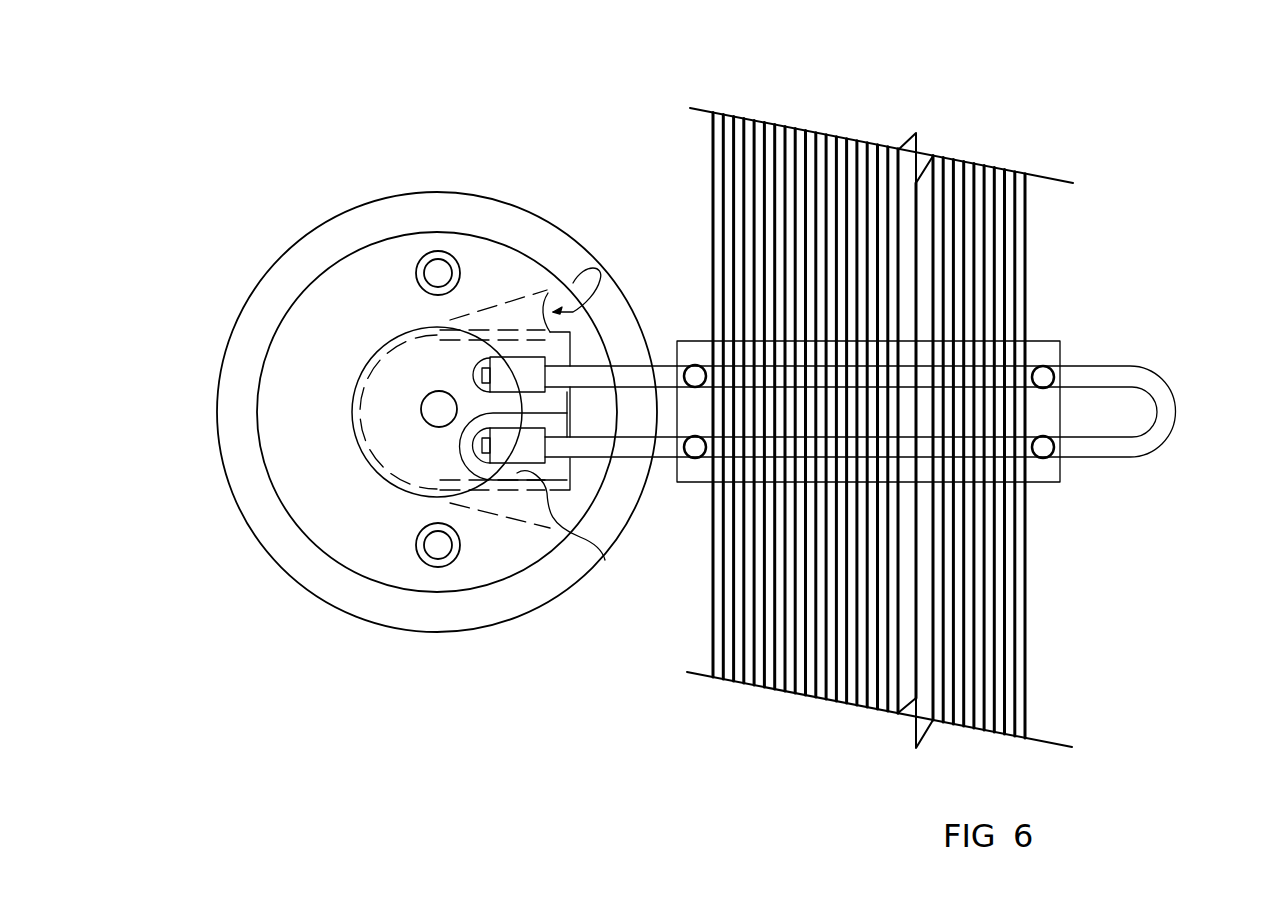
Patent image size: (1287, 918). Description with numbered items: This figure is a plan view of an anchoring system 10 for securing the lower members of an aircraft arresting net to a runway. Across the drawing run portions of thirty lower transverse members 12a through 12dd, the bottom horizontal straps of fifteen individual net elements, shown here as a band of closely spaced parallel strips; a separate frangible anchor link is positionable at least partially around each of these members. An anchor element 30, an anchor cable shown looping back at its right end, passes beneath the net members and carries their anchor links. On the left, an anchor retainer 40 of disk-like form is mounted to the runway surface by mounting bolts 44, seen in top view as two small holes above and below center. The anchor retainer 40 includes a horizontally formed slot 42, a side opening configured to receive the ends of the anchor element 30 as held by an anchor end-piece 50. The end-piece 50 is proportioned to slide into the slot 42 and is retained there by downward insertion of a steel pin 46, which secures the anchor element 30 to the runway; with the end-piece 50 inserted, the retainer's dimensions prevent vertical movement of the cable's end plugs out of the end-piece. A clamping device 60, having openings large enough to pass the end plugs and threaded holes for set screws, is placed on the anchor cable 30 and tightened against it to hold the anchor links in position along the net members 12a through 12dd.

The anchoring system 10 is at (697, 806).
The lower transverse member 12a is at (718, 112).
The lower transverse member 12dd is at (1025, 173).
The anchor element 30 is at (1172, 397).
The anchor retainer 40 is at (373, 198).
The slot 42 is at (592, 285).
The mounting bolts 44 is at (447, 251).
The steel pin 46 is at (421, 404).
The anchor end-piece 50 is at (600, 477).
The clamping device 60 is at (690, 341).